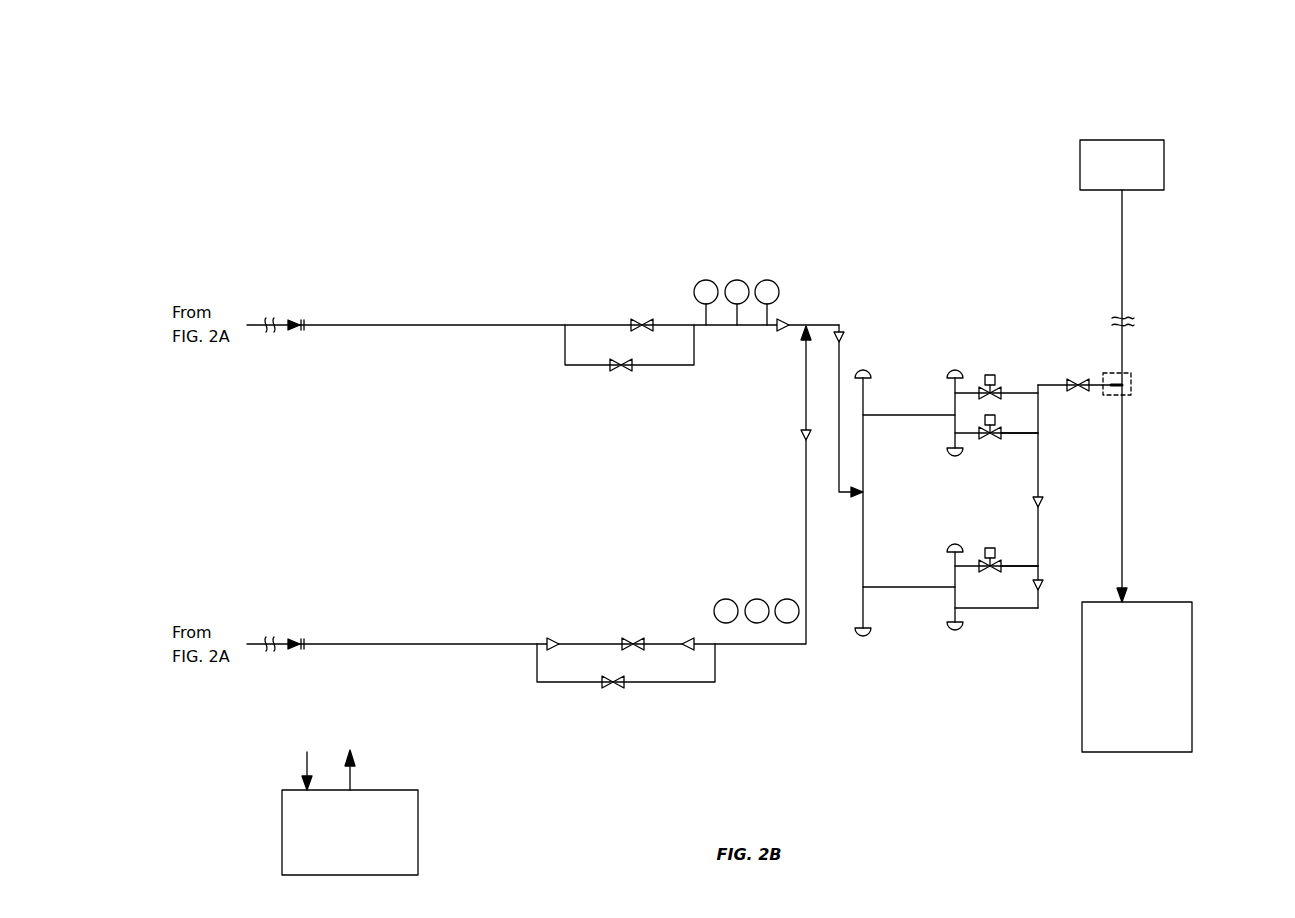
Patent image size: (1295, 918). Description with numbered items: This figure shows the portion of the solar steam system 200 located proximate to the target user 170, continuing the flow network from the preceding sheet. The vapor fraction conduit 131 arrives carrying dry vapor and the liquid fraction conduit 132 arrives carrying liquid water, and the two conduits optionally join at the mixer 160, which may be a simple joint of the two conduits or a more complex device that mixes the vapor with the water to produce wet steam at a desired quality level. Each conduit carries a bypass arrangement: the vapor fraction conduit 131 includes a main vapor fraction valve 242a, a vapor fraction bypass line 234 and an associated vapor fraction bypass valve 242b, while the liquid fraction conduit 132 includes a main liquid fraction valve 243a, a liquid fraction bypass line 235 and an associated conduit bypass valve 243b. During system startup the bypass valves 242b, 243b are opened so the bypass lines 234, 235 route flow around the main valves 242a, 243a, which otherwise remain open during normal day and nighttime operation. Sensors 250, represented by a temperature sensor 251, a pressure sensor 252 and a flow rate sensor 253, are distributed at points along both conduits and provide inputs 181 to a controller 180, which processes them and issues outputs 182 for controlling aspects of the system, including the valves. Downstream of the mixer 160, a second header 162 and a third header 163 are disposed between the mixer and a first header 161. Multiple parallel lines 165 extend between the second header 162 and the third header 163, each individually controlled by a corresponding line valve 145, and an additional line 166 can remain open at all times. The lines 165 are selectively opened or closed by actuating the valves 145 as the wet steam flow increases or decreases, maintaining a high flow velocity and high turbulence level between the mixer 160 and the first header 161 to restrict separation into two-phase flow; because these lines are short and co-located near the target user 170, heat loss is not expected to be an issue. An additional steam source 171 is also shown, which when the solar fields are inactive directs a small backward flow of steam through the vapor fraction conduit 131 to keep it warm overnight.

The system 200 is at (1228, 140).
The vapor fraction conduit 131 is at (405, 325).
The liquid fraction conduit 132 is at (410, 644).
The vapor fraction bypass line 234 is at (672, 367).
The liquid fraction bypass line 235 is at (690, 685).
The main vapor fraction valve 242a is at (630, 323).
The vapor fraction bypass valve 242b is at (620, 369).
The main liquid fraction valve 243a is at (630, 641).
The conduit bypass valve 243b is at (612, 688).
The sensors 250 is at (676, 294).
The temperature sensor 251 is at (736, 280).
The pressure sensor 252 is at (700, 281).
The flow rate sensor 253 is at (770, 280).
The mixer 160 is at (803, 312).
The second header 162 is at (866, 393).
The third header 163 is at (1040, 455).
The additional line 166 is at (1000, 610).
The line valves 145 is at (988, 332).
The parallel lines 165 is at (1029, 337).
The first header 161 is at (1124, 445).
The target user 170 is at (1152, 601).
The additional steam source 171 is at (1080, 160).
The controller 180 is at (418, 830).
The inputs 181 is at (307, 762).
The outputs 182 is at (350, 772).